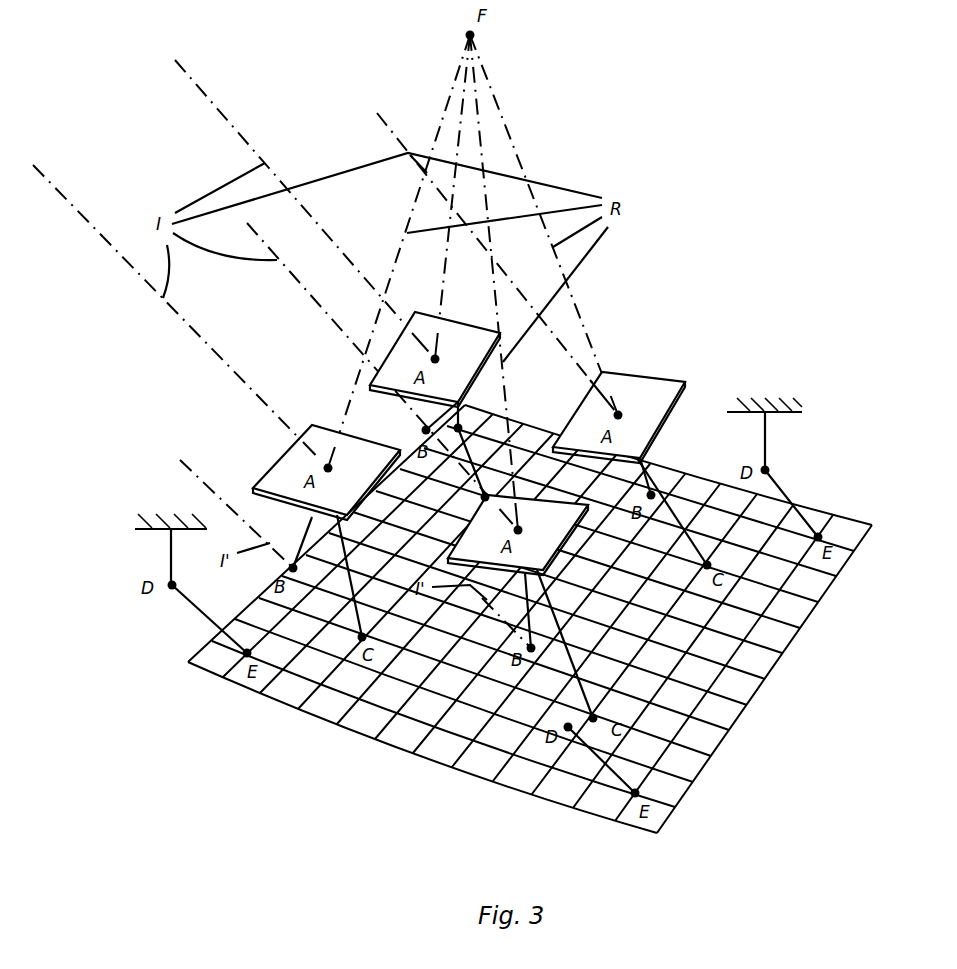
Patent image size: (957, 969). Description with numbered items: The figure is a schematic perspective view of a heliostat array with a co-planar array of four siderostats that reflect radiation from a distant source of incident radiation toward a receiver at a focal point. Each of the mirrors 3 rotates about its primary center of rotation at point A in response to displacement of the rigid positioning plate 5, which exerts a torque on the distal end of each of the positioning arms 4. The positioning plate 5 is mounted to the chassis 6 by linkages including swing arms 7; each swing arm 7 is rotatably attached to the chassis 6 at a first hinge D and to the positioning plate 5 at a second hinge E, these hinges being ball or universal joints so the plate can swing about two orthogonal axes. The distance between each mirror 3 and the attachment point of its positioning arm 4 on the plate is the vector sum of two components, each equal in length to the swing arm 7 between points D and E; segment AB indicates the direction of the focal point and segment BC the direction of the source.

The mirrors 3 is at (273, 457).
The positioning arms 4 is at (577, 693).
The positioning plate 5 is at (460, 457).
The chassis 6 is at (157, 550).
The swing arms 7 is at (192, 613).